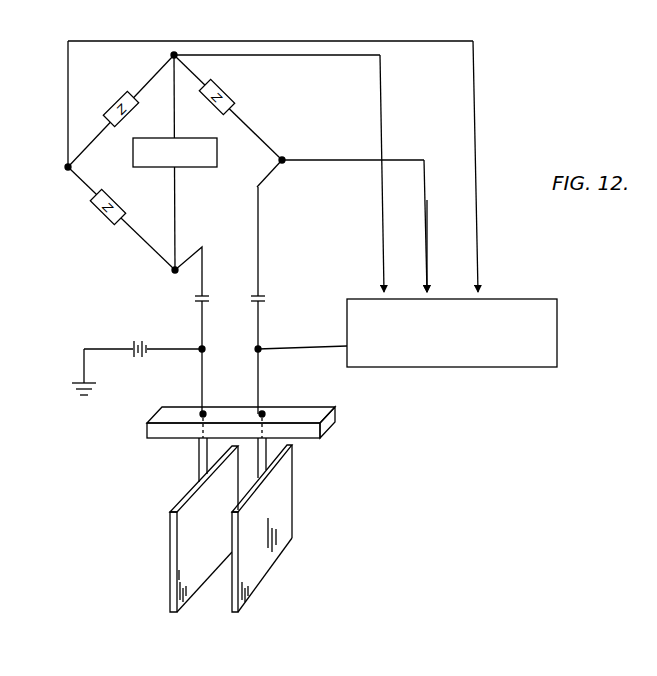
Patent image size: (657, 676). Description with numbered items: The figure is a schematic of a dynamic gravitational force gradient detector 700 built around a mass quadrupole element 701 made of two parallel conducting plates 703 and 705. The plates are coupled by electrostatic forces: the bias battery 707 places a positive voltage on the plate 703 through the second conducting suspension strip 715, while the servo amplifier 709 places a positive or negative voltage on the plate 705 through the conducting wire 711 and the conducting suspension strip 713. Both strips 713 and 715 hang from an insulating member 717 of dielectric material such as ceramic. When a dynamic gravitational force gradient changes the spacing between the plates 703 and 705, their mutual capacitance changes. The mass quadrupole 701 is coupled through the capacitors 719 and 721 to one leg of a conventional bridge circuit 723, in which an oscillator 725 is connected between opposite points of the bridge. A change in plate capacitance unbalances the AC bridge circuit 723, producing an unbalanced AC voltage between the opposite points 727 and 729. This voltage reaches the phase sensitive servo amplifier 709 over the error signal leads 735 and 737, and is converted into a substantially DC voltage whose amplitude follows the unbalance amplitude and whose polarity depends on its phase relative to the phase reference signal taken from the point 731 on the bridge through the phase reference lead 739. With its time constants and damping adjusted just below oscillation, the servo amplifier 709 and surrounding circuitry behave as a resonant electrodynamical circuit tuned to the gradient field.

The dynamic gravitational force gradient detector 700 is at (500, 150).
The mass quadrupole element 701 is at (234, 547).
The conducting plate 703 is at (186, 541).
The conducting plate 705 is at (255, 537).
The bias battery 707 is at (144, 364).
The servo amplifier 709 is at (528, 345).
The conducting wire 711 is at (287, 348).
The conducting suspension strip 713 is at (266, 461).
The second conducting suspension strip 715 is at (197, 454).
The insulating member 717 is at (150, 432).
The capacitor 719 is at (197, 303).
The capacitor 721 is at (253, 303).
The bridge circuit 723 is at (208, 130).
The oscillator 725 is at (208, 152).
The opposite point of the bridge circuit 727 is at (66, 169).
The opposite point of the bridge circuit 729 is at (284, 157).
The point on the bridge circuit 731 is at (175, 53).
The error signal lead 735 is at (428, 238).
The error signal lead 737 is at (482, 240).
The phase reference lead 739 is at (382, 216).